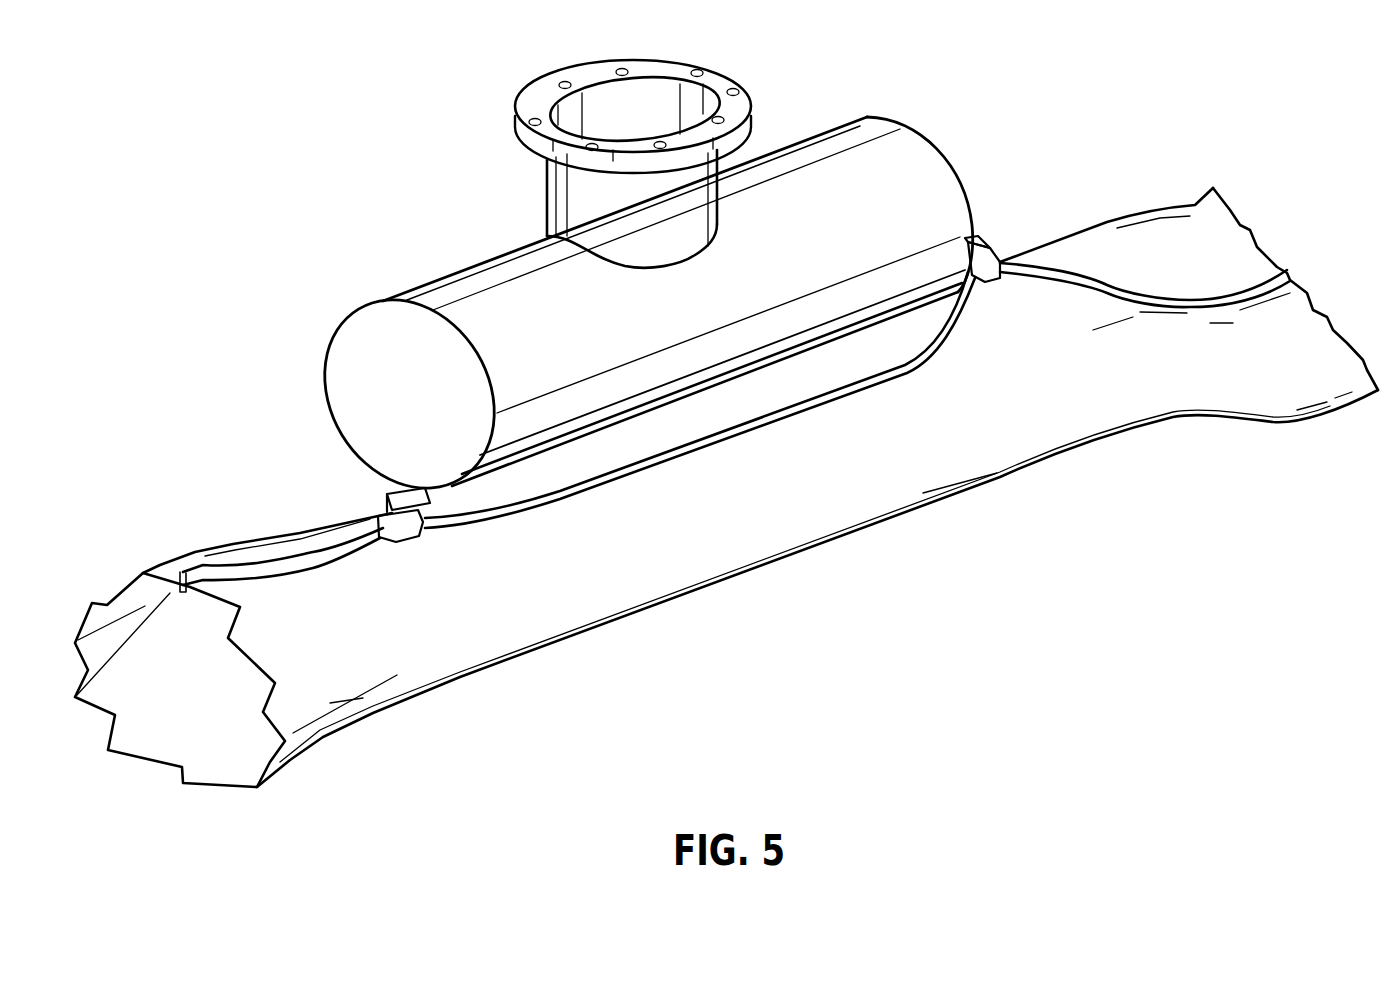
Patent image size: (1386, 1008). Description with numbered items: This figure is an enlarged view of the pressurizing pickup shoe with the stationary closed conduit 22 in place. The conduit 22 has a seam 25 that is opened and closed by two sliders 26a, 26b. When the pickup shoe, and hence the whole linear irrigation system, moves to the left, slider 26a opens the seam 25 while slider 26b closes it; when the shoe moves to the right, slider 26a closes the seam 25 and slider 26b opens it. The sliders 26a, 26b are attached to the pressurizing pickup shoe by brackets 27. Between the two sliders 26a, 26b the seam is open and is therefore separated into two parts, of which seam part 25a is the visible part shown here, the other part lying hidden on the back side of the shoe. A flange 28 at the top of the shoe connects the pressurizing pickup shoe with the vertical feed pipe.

The stationary closed conduit 22 is at (1222, 405).
The seam 25 is at (1157, 293).
The seam part 25a is at (853, 390).
The slider 26a is at (382, 522).
The slider 26b is at (992, 248).
The bracket 27 is at (392, 493).
The flange 28 is at (513, 112).